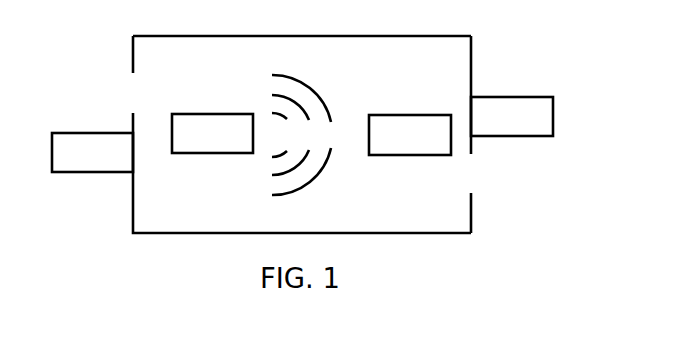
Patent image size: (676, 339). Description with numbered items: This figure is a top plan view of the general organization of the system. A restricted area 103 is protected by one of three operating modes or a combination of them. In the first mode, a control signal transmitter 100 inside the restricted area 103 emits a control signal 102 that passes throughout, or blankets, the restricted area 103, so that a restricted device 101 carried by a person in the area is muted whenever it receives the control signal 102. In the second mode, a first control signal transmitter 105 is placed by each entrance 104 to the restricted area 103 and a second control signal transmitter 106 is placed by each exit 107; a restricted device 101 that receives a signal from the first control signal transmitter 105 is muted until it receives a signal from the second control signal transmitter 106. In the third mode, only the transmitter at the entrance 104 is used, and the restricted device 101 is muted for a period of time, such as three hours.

The control signal transmitter 100 is at (212, 133).
The restricted device 101 is at (410, 135).
The control signal 102 is at (301, 135).
The restricted area 103 is at (348, 34).
The entrance 104 is at (133, 73).
The first control signal transmitter 105 is at (92, 152).
The second control signal transmitter 106 is at (512, 116).
The exit 107 is at (471, 193).